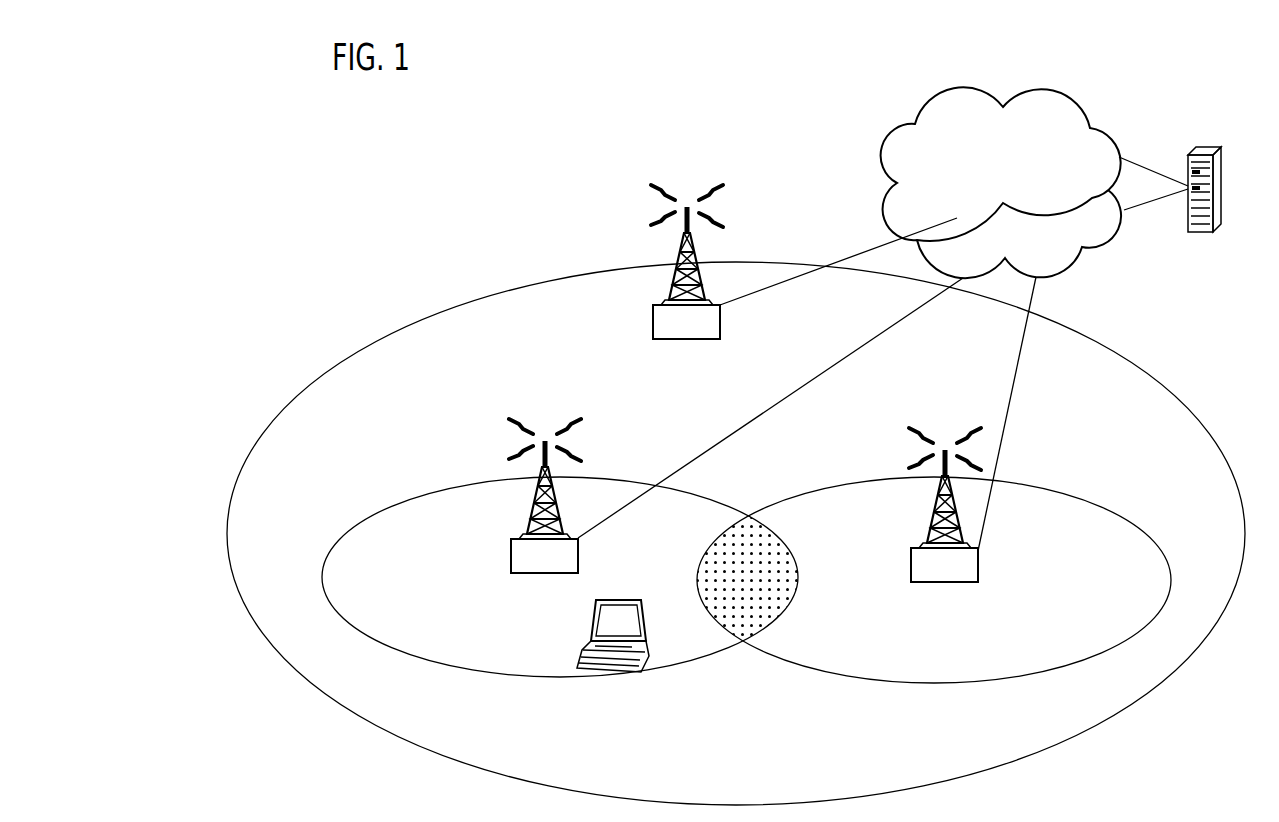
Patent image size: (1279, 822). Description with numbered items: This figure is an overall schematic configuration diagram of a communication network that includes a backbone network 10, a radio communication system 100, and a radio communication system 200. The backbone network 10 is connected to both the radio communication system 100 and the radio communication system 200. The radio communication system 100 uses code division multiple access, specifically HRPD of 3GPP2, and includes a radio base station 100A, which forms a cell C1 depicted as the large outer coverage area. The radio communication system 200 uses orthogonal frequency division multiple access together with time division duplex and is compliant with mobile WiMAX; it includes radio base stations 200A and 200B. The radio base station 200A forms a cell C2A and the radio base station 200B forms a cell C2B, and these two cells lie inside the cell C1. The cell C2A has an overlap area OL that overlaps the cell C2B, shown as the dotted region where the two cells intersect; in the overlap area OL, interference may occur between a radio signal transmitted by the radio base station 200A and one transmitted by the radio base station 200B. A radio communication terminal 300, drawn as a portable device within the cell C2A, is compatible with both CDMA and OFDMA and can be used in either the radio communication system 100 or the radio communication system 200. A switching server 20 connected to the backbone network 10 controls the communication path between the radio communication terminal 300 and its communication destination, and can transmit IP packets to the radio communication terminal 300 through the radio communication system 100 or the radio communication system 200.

The radio communication system 100 is at (736, 413).
The backbone network 10 is at (1061, 88).
The switching server 20 is at (1208, 147).
The radio base station 100A is at (693, 250).
The radio communication system 200 is at (746, 599).
The radio base station 200A is at (552, 500).
The radio base station 200B is at (947, 498).
The radio communication terminal 300 is at (629, 596).
The cell C1 is at (518, 287).
The cell C2A is at (451, 486).
The cell C2B is at (1095, 505).
The overlap area OL is at (747, 570).